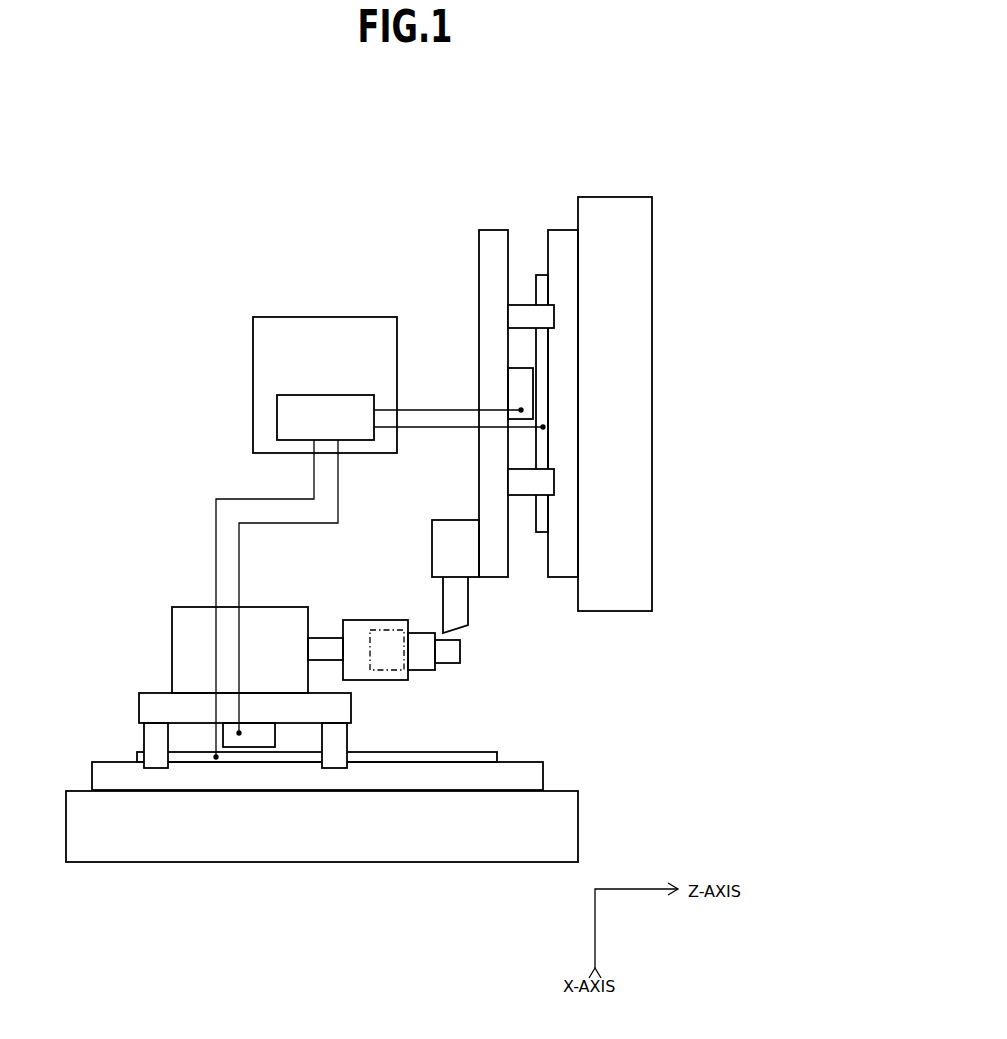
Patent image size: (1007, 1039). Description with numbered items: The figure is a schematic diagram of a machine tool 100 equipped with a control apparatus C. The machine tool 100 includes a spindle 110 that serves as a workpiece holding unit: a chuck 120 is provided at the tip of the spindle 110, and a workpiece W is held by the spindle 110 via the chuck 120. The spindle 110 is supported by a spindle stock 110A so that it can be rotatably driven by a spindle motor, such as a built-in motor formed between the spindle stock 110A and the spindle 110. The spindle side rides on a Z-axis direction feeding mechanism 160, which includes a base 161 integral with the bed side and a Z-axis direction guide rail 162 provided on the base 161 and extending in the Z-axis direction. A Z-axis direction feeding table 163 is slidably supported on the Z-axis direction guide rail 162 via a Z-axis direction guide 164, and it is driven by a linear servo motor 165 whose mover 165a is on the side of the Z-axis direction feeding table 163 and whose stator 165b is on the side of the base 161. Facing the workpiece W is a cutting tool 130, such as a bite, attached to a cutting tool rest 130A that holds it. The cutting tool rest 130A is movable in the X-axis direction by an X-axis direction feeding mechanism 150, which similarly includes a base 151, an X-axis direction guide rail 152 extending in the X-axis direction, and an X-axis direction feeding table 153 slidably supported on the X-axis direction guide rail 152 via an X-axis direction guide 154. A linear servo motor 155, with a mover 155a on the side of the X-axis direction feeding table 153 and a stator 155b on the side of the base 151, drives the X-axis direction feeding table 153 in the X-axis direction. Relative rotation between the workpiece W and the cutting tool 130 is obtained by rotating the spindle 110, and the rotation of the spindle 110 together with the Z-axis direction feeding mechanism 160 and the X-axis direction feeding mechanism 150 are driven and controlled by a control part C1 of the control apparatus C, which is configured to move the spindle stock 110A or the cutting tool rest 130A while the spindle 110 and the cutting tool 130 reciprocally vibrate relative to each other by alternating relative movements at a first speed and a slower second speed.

The machine tool 100 is at (195, 234).
The spindle 110 is at (327, 648).
The spindle stock 110A is at (192, 632).
The chuck 120 is at (375, 623).
The cutting tool 130 is at (455, 612).
The cutting tool rest 130A is at (455, 537).
The X-axis direction feeding mechanism 150 is at (645, 130).
The base 151 is at (632, 207).
The X-axis direction guide rail 152 is at (563, 240).
The X-axis direction feeding table 153 is at (487, 297).
The X-axis direction guide 154 is at (522, 313).
The linear servo motor 155 is at (712, 242).
The mover 155a is at (523, 377).
The stator 155b is at (543, 397).
The Z-axis direction feeding mechanism 160 is at (126, 912).
The base 161 is at (445, 845).
The Z-axis direction guide rail 162 is at (543, 780).
The Z-axis direction feeding table 163 is at (160, 698).
The Z-axis direction guide 164 is at (158, 742).
The linear servo motor 165 is at (248, 898).
The mover 165a is at (260, 735).
The stator 165b is at (302, 755).
The control apparatus C is at (312, 316).
The control part C1 is at (325, 395).
The workpiece W is at (448, 650).